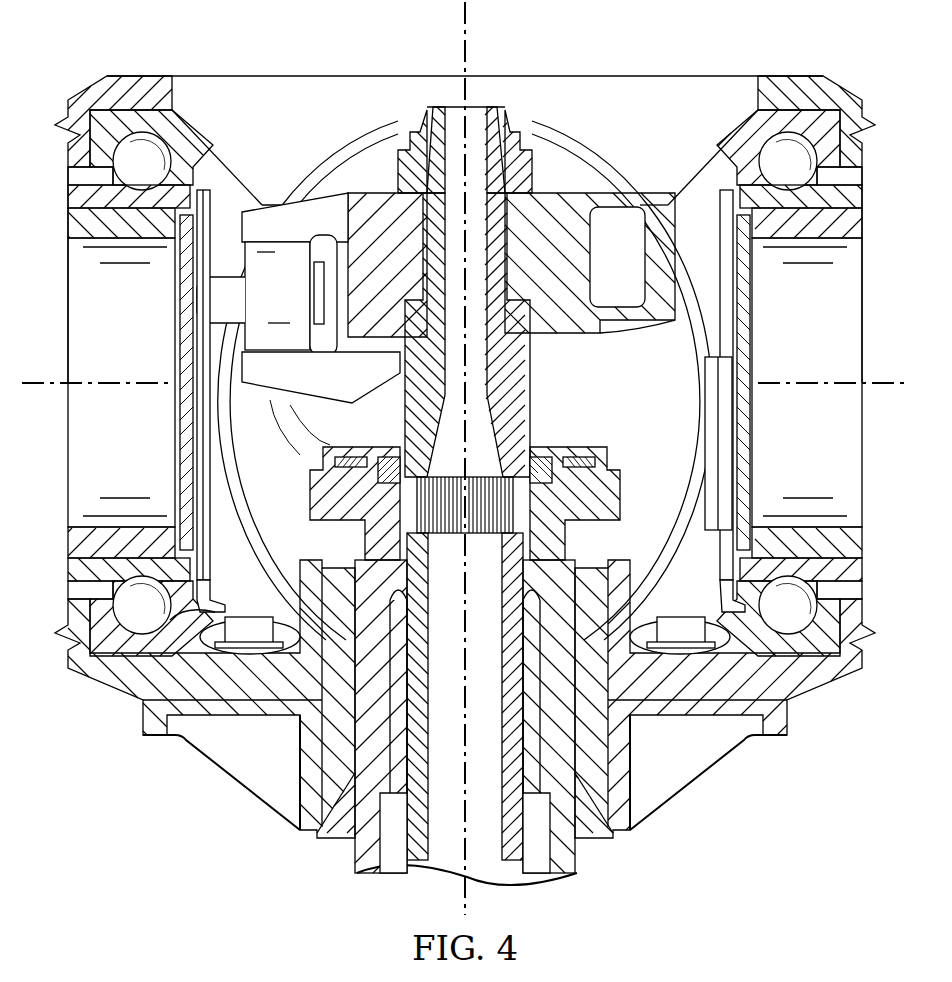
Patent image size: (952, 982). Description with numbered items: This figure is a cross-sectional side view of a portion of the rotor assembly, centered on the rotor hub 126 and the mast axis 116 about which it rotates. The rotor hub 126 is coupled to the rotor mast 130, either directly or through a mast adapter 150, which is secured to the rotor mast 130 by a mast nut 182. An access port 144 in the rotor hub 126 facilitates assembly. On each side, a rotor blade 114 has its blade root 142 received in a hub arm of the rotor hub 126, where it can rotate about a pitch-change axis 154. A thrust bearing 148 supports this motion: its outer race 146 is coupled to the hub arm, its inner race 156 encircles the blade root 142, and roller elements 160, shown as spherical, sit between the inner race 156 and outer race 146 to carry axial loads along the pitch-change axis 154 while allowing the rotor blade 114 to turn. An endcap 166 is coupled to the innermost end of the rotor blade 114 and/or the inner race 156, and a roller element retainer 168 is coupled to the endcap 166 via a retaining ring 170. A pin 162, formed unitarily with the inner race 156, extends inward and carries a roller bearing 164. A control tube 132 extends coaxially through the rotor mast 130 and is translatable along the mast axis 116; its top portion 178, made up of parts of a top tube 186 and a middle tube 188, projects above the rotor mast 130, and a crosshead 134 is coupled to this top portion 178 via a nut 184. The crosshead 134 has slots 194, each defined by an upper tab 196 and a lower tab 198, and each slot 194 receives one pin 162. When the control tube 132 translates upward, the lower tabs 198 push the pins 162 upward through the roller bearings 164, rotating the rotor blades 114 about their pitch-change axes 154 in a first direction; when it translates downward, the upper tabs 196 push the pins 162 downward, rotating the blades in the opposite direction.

The rotor blade 114 is at (77, 228).
The mast axis 116 is at (467, 28).
The rotor hub 126 is at (110, 82).
The rotor mast 130 is at (578, 846).
The control tube 132 is at (527, 860).
The crosshead 134 is at (603, 192).
The blade root 142 is at (838, 228).
The access port 144 is at (272, 75).
The outer race 146 is at (132, 123).
The thrust bearing 148 is at (758, 143).
The mast adapter 150 is at (305, 782).
The pitch-change axis 154 is at (40, 382).
The inner race 156 is at (77, 198).
The roller elements 160 is at (796, 145).
The pin 162 is at (205, 287).
The roller bearing 164 is at (280, 262).
The endcap 166 is at (738, 372).
The roller element retainer 168 is at (783, 630).
The retaining ring 170 is at (216, 604).
The top portion 178 is at (533, 408).
The mast nut 182 is at (317, 466).
The nut 184 is at (398, 152).
The top tube 186 is at (500, 110).
The middle tube 188 is at (403, 855).
The slot 194 is at (230, 333).
The upper tab 196 is at (318, 212).
The lower tab 198 is at (300, 388).